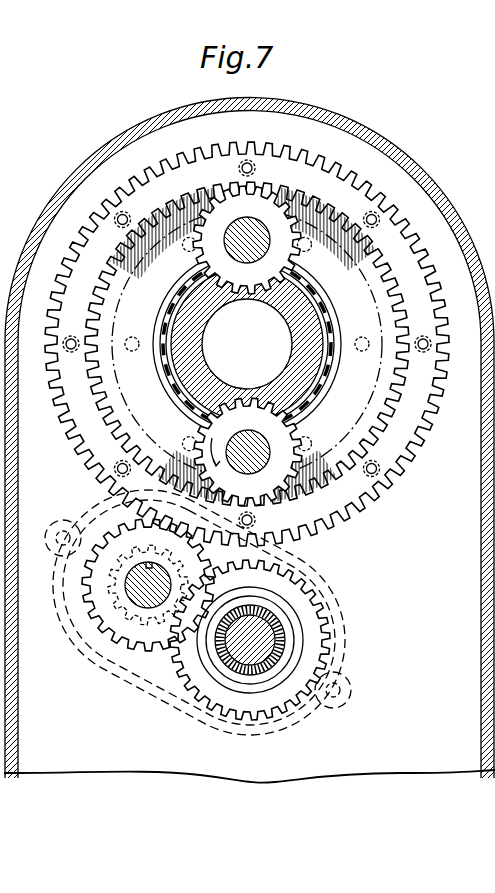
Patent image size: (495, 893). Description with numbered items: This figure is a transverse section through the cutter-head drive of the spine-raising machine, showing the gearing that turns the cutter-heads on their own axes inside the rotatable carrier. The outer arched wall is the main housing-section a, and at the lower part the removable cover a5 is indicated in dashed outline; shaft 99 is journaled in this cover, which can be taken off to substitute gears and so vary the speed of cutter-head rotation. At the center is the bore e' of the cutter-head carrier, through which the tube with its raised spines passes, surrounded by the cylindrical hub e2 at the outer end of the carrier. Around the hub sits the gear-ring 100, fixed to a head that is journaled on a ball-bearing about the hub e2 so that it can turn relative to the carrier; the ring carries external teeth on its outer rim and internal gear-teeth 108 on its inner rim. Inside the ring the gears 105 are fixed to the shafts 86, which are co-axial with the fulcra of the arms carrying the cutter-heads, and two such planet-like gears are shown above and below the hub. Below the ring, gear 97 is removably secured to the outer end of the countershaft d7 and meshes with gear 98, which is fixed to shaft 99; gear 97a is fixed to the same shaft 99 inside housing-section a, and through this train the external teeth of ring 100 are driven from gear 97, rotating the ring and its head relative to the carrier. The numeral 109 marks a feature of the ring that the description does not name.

The main housing-section a is at (438, 194).
The gear-ring 100 is at (253, 348).
The external teeth of ring gear 109 is at (380, 497).
The internal gear-teeth 108 is at (343, 473).
The gears 105 is at (306, 441).
The bore e' is at (247, 344).
The cylindrical hub e2 is at (300, 323).
The shafts 86 is at (250, 252).
The removable cover a5 is at (193, 716).
The gear 97 is at (262, 713).
The countershaft d7 is at (272, 630).
The gear 98 is at (150, 627).
The gear 97a is at (132, 630).
The shaft 99 is at (136, 603).